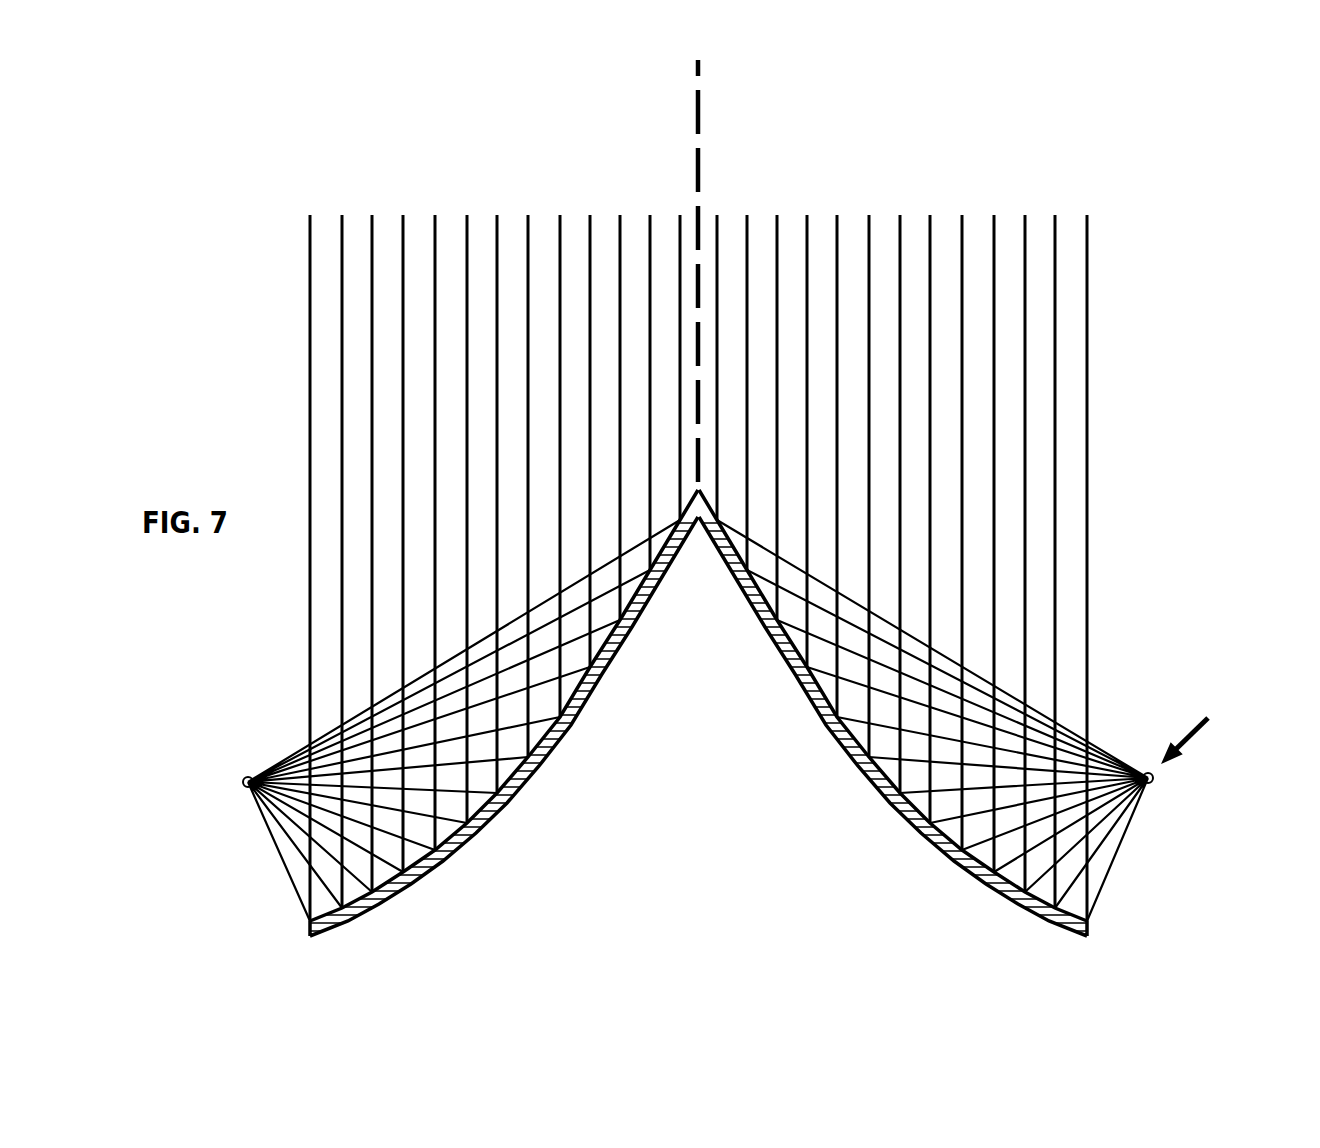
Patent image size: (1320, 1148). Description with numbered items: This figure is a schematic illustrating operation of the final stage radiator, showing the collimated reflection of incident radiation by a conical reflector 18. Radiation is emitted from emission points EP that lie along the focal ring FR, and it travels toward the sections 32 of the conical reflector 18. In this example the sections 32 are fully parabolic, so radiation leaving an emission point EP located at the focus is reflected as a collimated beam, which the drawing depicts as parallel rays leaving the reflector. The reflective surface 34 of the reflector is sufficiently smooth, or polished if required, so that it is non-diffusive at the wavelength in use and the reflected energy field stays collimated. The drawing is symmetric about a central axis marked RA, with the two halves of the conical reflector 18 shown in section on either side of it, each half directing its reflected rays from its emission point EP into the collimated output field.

The conical reflector 18 is at (761, 715).
The sections 32 is at (587, 703).
The reflective surface 34 is at (927, 803).
The reflection axis RA is at (698, 172).
The emission points EP is at (1152, 783).
The focal ring FR is at (1206, 733).